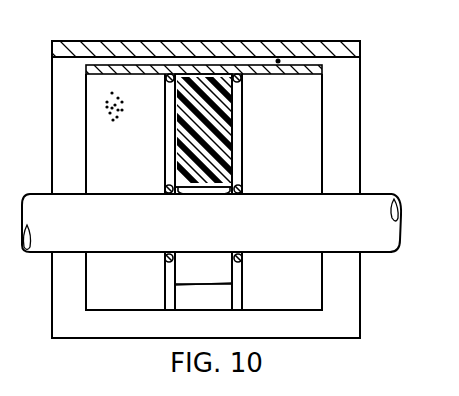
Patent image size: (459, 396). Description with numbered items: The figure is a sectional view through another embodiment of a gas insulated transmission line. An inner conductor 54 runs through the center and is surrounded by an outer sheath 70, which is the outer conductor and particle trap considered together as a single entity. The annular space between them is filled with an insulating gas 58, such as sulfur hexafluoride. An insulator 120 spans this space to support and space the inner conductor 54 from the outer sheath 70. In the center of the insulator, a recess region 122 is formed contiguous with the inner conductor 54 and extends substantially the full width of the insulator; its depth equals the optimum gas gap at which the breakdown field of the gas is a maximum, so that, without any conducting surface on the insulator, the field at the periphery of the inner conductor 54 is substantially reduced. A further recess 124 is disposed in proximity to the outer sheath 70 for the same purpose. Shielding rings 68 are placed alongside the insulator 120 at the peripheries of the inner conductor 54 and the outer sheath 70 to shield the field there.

The inner conductor 54 is at (372, 208).
The insulating gas 58 is at (113, 115).
The shielding rings 68 is at (166, 80).
The outer sheath 70 is at (288, 32).
The insulator 120 is at (223, 133).
The recess region 122 is at (218, 190).
The recess 124 is at (195, 74).